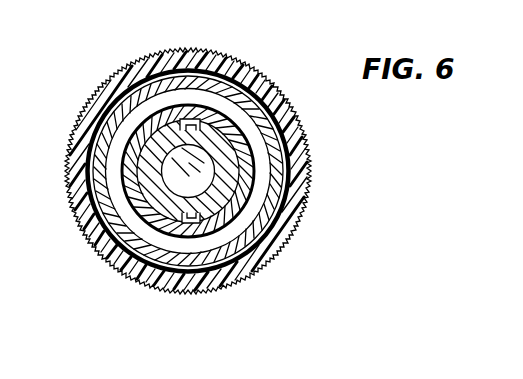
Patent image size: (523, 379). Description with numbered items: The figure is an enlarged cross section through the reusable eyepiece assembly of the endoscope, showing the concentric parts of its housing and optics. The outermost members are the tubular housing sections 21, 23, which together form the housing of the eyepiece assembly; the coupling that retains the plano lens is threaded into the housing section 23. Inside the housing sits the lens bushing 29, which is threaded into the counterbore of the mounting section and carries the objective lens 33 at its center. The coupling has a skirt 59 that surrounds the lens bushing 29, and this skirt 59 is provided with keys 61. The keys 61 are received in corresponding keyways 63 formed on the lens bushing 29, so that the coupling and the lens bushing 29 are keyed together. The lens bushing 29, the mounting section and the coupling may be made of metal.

The tubular housing section 21 is at (185, 72).
The tubular housing section 23 is at (172, 27).
The lens bushing 29 is at (199, 191).
The objective lens 33 is at (190, 200).
The skirt 59 is at (153, 123).
The key 61 is at (196, 126).
The keyway 63 is at (206, 219).